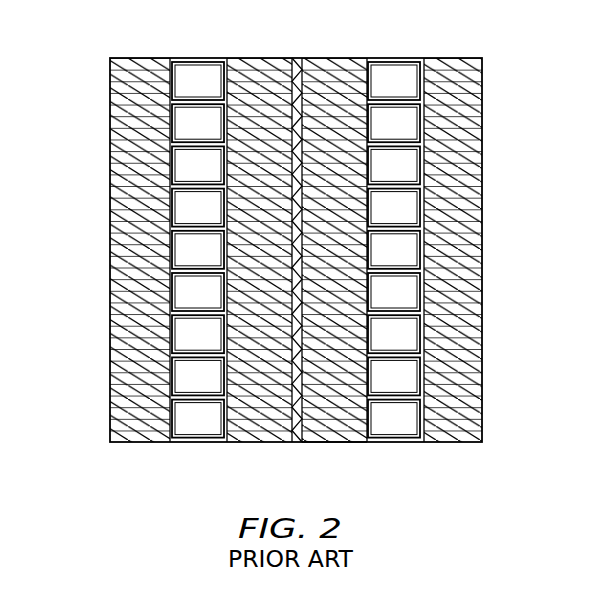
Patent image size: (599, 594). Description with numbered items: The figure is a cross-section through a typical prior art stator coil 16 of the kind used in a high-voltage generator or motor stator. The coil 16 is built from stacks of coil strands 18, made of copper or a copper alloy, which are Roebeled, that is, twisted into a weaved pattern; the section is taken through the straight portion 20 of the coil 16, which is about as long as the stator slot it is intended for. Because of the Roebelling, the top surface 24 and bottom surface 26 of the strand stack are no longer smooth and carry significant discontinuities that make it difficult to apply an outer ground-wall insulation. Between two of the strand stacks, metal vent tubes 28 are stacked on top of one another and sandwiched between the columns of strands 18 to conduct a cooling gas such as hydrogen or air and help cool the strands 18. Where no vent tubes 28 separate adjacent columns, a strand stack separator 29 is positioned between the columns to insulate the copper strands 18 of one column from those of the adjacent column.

The stator coil 16 is at (104, 246).
The coil strands 18 is at (143, 97).
The straight portion 20 is at (262, 58).
The top surface 24 is at (332, 58).
The bottom surface 26 is at (345, 442).
The metal vent tubes 28 is at (400, 380).
The strand stack separator 29 is at (293, 205).